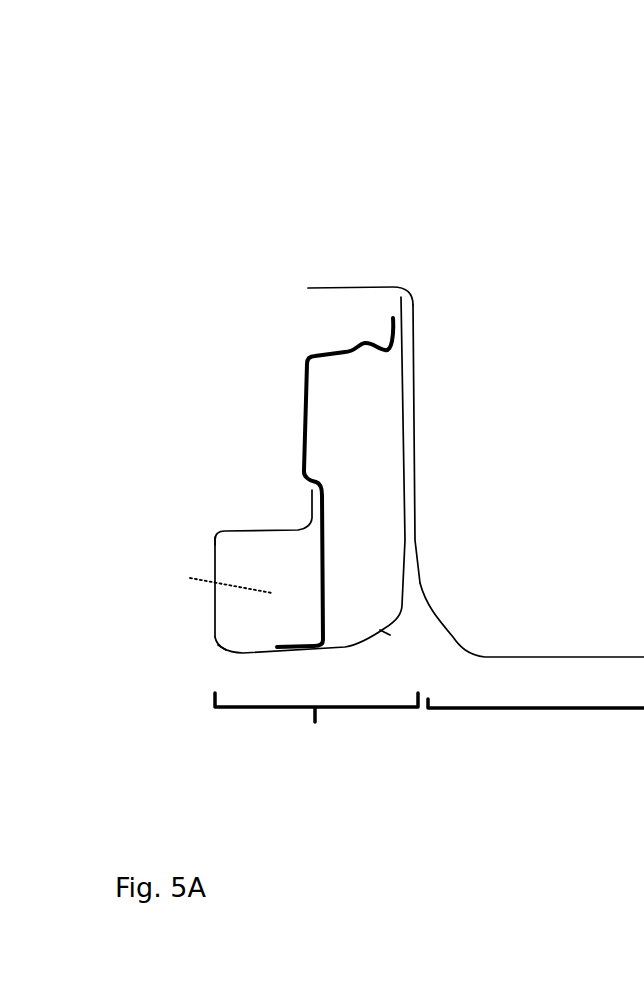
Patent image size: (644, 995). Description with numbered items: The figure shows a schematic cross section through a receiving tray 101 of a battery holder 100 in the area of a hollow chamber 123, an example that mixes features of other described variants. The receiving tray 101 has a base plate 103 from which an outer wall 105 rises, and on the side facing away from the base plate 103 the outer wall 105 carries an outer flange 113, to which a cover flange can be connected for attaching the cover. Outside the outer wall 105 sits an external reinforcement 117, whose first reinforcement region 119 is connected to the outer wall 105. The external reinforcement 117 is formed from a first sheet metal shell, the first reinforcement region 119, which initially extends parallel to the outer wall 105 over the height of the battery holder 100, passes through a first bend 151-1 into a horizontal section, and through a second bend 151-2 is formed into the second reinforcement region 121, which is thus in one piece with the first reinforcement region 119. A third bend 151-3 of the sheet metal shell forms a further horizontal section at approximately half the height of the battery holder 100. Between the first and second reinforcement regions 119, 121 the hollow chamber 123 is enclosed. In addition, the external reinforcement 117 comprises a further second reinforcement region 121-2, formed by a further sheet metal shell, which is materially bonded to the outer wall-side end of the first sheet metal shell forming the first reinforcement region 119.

The battery holder 100 is at (276, 93).
The receiving tray 101 is at (543, 712).
The base plate 103 is at (532, 657).
The outer wall 105 is at (417, 402).
The outer flange 113 is at (351, 287).
The external reinforcement 117 is at (316, 723).
The first reinforcement region 119 is at (404, 483).
The second reinforcement region 121 is at (223, 530).
The further second reinforcement region 121-2 is at (308, 360).
The hollow chamber 123 is at (196, 581).
The first bend 151-1 is at (385, 633).
The second bend 151-2 is at (223, 647).
The third bend 151-3 is at (215, 538).